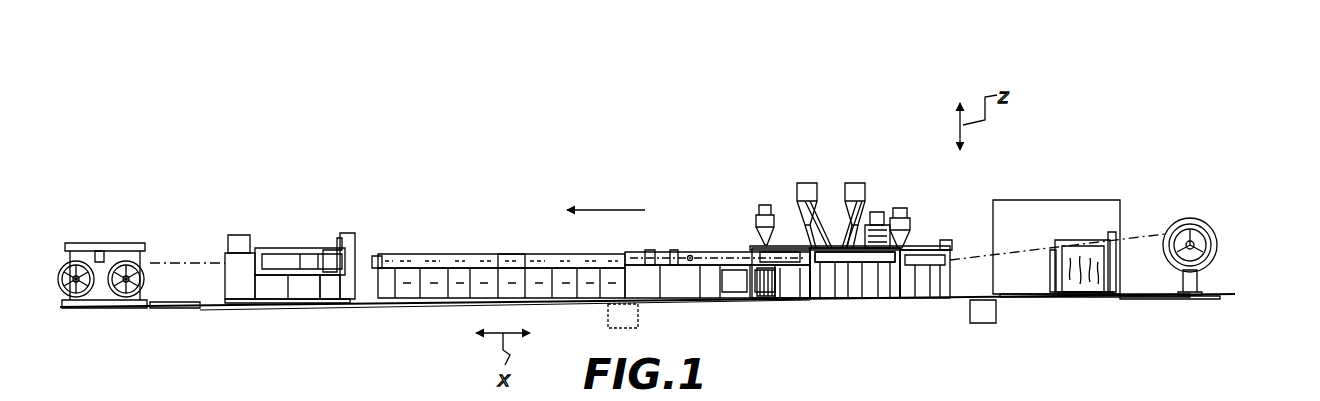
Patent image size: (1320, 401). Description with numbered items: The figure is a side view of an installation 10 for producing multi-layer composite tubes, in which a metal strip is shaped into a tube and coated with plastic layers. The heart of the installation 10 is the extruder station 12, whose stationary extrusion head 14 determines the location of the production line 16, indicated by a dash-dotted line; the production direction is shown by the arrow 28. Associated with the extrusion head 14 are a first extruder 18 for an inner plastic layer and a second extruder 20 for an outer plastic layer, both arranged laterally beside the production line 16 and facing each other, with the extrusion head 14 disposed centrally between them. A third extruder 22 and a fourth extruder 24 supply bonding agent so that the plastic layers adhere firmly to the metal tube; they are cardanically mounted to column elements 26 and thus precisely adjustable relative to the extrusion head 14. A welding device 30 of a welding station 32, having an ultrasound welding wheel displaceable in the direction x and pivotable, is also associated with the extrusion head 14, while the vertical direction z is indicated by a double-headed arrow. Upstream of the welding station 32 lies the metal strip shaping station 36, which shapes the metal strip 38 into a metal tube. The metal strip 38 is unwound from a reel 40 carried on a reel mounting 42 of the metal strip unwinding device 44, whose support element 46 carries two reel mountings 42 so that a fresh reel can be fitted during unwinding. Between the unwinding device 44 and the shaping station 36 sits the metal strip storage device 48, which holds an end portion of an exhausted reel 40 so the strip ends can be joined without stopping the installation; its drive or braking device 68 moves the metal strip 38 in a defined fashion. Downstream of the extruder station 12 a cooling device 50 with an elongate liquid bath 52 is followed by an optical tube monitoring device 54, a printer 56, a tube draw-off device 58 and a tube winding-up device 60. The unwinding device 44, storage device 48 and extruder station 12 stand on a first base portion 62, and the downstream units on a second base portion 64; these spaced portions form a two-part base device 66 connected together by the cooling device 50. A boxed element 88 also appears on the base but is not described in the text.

The installation 10 is at (713, 108).
The extruder station 12 is at (835, 195).
The extrusion head 14 is at (810, 297).
The production line 16 is at (690, 255).
The first extruder 18 is at (908, 242).
The second extruder 20 is at (793, 242).
The third extruder 22 is at (873, 190).
The fourth extruder 24 is at (797, 178).
The column elements 26 is at (830, 200).
The arrow 28 is at (600, 210).
The welding device 30 is at (855, 273).
The welding station 32 is at (855, 257).
The metal strip shaping station 36 is at (885, 298).
The metal strip 38 is at (1013, 248).
The reel 40 is at (1200, 230).
The reel mountings 42 is at (1200, 252).
The metal strip unwinding device 44 is at (1189, 195).
The support element 46 is at (1205, 292).
The metal strip storage device 48 is at (1085, 250).
The cooling device 50 is at (516, 250).
The liquid bath 52 is at (458, 252).
The optical tube monitoring device 54 is at (348, 245).
The printer 56 is at (332, 250).
The tube draw-off device 58 is at (277, 245).
The tube winding-up device 60 is at (121, 233).
The first base portion 62 is at (1022, 300).
The second base portion 64 is at (250, 304).
The base device 66 is at (1143, 305).
The drive or braking device 68 is at (1126, 240).
The control unit 88 is at (983, 311).